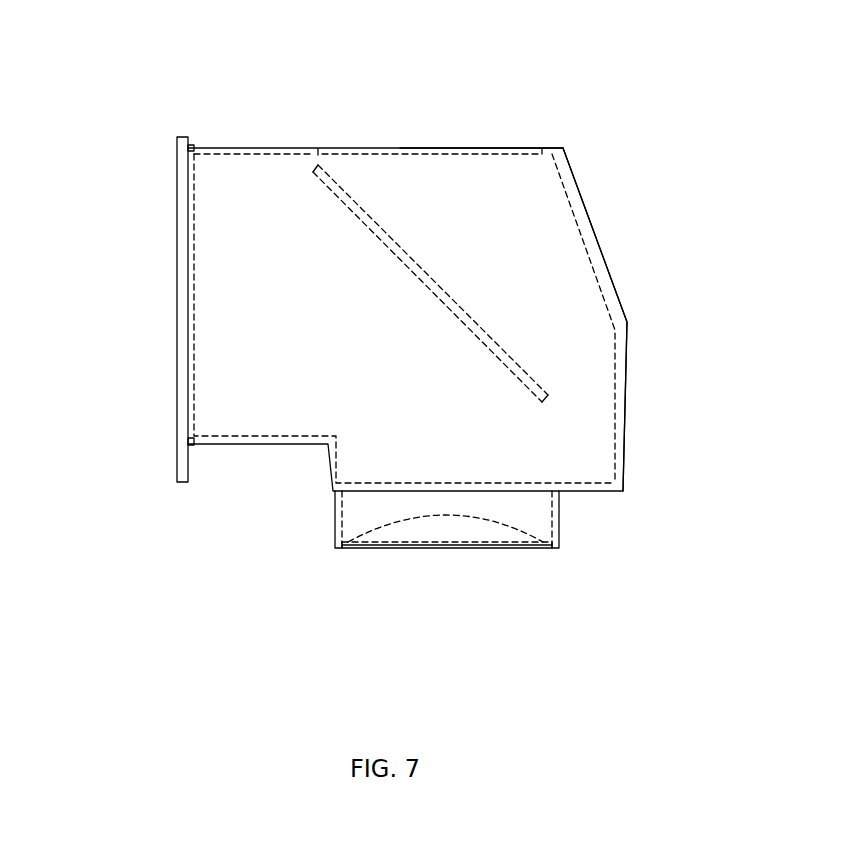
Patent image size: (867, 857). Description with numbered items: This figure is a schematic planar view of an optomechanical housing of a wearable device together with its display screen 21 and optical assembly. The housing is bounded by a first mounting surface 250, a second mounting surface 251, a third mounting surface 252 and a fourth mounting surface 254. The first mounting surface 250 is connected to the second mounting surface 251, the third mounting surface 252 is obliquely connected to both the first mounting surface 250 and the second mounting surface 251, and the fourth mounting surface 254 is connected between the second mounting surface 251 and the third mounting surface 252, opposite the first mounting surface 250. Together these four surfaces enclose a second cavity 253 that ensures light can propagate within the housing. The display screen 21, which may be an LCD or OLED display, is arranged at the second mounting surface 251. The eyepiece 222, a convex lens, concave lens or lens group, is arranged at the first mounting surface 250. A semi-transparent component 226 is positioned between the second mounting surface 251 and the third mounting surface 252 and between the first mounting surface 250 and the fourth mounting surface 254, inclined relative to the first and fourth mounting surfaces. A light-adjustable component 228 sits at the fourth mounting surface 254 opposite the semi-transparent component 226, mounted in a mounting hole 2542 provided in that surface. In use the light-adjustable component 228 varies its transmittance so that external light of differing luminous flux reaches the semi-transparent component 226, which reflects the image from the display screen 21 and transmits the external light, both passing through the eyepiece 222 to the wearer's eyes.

The display screen 21 is at (182, 336).
The second mounting surface 251 is at (166, 246).
The third mounting surface 252 is at (604, 217).
The second cavity 253 is at (291, 378).
The fourth mounting surface 254 is at (273, 135).
The mounting hole 2542 is at (318, 152).
The light-adjustable component 228 is at (507, 147).
The semi-transparent component 226 is at (514, 352).
The eyepiece 222 is at (398, 532).
The first mounting surface 250 is at (502, 558).